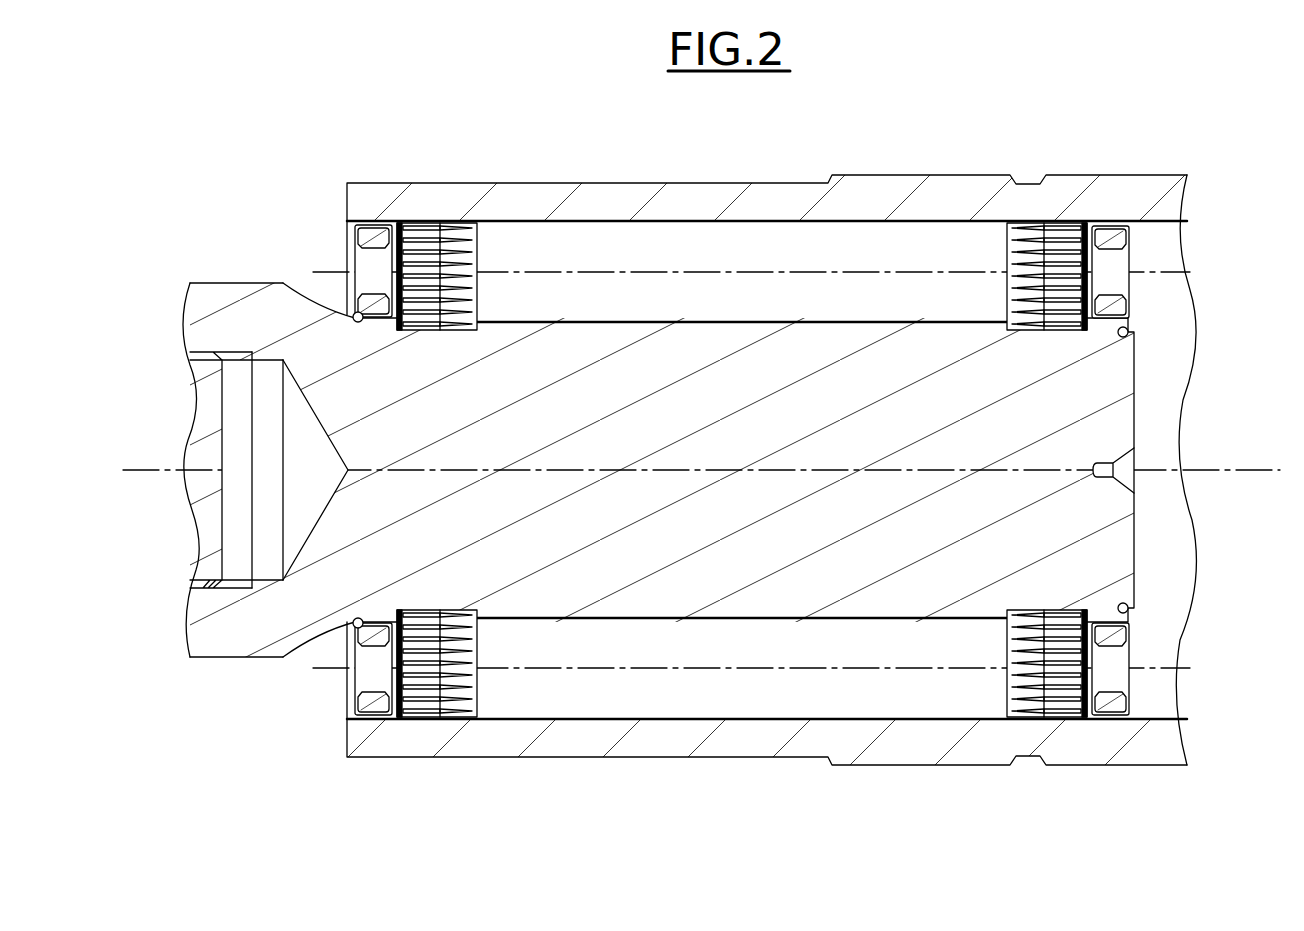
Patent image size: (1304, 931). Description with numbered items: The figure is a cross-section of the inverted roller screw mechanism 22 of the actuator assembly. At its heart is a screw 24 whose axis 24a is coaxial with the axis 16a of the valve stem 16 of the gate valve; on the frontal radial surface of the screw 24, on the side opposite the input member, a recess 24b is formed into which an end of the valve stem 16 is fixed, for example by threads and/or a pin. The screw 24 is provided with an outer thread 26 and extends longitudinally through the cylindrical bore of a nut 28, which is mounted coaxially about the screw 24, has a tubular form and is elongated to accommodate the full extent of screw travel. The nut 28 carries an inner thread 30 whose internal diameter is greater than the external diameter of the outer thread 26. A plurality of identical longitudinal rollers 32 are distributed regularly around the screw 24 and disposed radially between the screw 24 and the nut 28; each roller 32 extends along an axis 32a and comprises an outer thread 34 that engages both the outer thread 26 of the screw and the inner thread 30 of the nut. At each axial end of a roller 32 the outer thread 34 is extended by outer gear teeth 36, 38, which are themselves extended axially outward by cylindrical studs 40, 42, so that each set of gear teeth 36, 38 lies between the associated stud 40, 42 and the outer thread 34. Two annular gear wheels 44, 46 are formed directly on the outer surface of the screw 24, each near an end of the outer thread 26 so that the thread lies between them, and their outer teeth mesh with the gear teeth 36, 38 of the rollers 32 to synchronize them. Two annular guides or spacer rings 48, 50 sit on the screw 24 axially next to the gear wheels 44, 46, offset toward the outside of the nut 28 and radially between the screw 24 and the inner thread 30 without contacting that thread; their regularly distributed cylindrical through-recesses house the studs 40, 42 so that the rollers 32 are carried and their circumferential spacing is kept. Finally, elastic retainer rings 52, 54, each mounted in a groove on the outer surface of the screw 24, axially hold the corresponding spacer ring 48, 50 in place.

The valve stem 16 is at (203, 530).
The axis of the valve stem 16a is at (216, 470).
The inverted roller screw mechanism 22 is at (771, 447).
The screw 24 is at (585, 372).
The axis of the screw 24a is at (133, 470).
The recess 24b is at (212, 582).
The outer thread 26 is at (535, 320).
The nut 28 is at (737, 192).
The inner thread 30 is at (638, 250).
The rollers 32 is at (557, 686).
The axis of the roller 32a is at (316, 670).
The outer thread of the roller 34 is at (973, 722).
The outer gear teeth 36 is at (418, 697).
The outer gear teeth 38 is at (1033, 688).
The cylindrical stud 40 is at (373, 684).
The cylindrical stud 42 is at (1112, 681).
The annular gear wheel 44 is at (410, 327).
The annular gear wheel 46 is at (1067, 327).
The spacer ring 48 is at (373, 237).
The spacer ring 50 is at (1107, 237).
The elastic retainer ring 52 is at (353, 313).
The elastic retainer ring 54 is at (1128, 330).